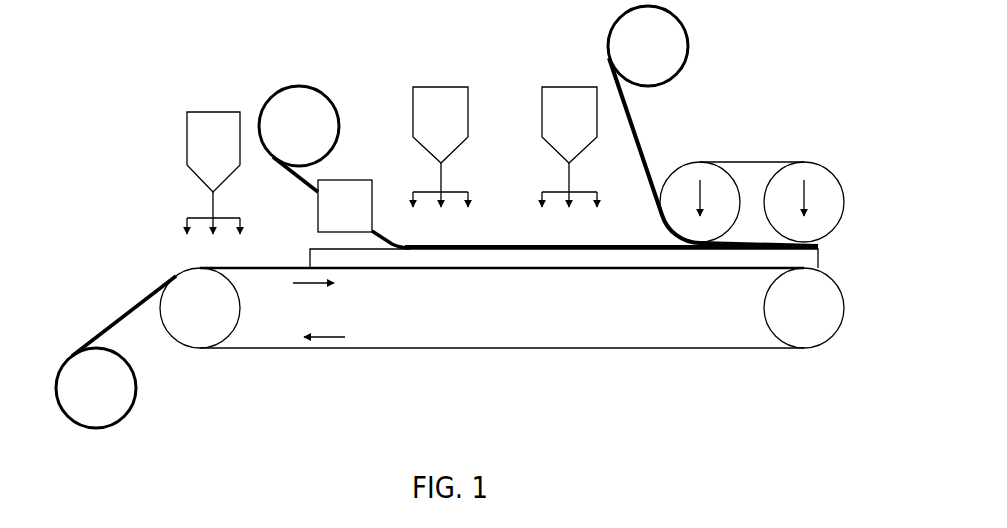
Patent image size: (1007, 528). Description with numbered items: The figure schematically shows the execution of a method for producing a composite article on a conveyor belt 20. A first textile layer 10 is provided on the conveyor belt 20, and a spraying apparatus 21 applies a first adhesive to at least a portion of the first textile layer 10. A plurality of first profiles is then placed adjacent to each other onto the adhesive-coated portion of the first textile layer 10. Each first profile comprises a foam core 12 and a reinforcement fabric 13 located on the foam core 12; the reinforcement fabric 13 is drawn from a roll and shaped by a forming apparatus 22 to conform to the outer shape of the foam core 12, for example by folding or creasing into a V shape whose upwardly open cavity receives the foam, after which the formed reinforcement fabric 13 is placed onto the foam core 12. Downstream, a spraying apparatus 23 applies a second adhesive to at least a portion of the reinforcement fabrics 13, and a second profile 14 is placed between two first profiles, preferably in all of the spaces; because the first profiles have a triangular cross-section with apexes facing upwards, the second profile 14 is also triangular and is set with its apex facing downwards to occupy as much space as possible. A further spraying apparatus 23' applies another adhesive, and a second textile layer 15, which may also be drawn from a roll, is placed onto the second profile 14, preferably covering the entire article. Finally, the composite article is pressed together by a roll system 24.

The first textile layer 10 is at (130, 312).
The foam core 12 is at (297, 244).
The reinforcement fabric 13 is at (332, 97).
The second profile 14 is at (527, 233).
The second textile layer 15 is at (638, 133).
The conveyor belt 20 is at (267, 348).
The spraying apparatus 21 is at (217, 112).
The forming apparatus 22 is at (368, 180).
The spraying apparatus 23 is at (440, 104).
The spraying apparatus 23' is at (569, 104).
The roll system 24 is at (737, 163).